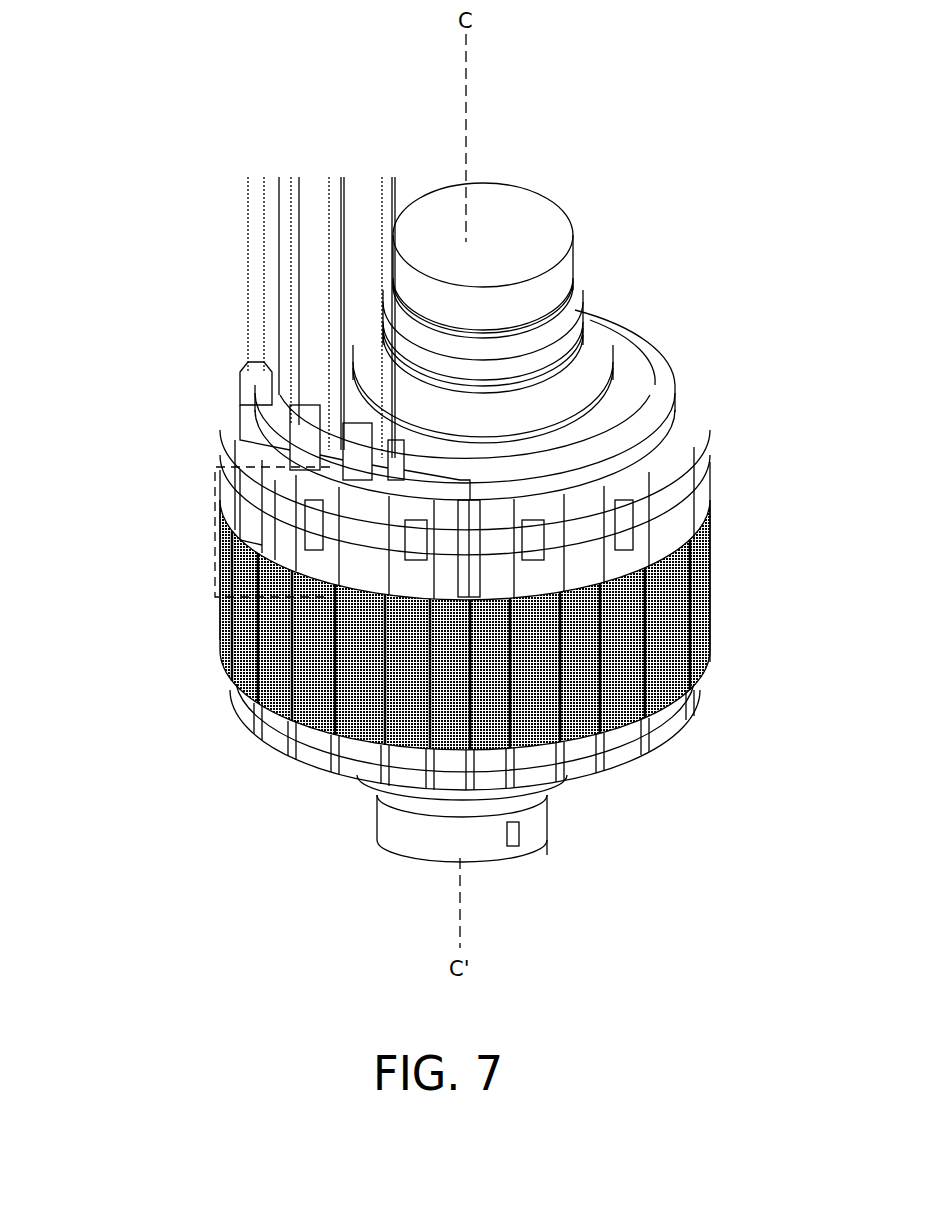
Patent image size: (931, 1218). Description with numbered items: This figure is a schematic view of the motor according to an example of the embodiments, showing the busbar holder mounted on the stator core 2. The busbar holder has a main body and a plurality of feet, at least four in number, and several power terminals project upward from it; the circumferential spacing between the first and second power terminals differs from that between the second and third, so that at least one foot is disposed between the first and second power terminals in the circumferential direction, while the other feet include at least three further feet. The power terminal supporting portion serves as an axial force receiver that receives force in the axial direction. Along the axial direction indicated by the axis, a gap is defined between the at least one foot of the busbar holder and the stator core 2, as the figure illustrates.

The stator core 2 is at (248, 631).